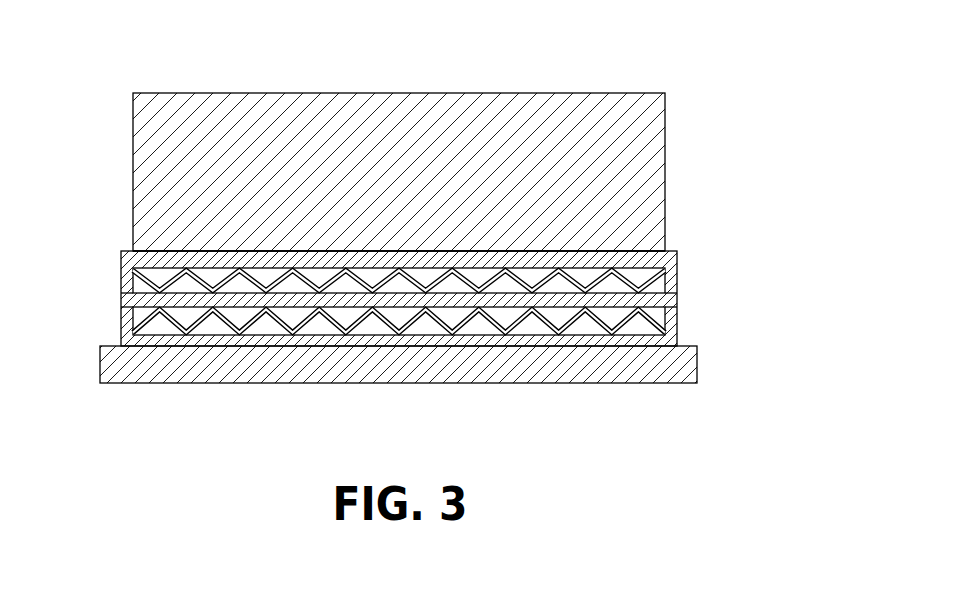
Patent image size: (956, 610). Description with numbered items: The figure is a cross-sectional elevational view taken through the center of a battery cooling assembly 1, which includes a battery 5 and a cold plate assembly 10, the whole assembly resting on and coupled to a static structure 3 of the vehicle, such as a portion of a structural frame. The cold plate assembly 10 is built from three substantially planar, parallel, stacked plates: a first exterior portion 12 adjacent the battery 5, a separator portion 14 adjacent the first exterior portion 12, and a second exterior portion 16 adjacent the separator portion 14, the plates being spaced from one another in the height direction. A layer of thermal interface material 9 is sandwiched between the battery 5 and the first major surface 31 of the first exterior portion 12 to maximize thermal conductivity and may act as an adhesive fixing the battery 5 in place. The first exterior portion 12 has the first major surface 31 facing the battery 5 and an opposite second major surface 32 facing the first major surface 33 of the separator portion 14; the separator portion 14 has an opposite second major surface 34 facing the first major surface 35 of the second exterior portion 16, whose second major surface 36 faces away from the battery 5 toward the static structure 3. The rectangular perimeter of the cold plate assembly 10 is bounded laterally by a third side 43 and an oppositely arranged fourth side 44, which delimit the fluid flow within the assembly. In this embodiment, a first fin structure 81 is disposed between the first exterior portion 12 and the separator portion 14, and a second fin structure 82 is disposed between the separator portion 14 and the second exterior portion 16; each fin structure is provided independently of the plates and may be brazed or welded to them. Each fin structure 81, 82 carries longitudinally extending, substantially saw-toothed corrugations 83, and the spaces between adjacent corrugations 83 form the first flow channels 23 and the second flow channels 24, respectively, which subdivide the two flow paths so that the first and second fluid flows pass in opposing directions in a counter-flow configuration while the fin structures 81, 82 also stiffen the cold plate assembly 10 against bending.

The battery cooling assembly 1 is at (436, 225).
The static structure 3 is at (437, 383).
The battery 5 is at (408, 100).
The thermal interface material 9 is at (157, 252).
The cold plate assembly 10 is at (436, 239).
The first exterior portion 12 is at (672, 253).
The separator portion 14 is at (678, 302).
The second exterior portion 16 is at (672, 342).
The first flow channels 23 is at (372, 277).
The second flow channels 24 is at (323, 327).
The first major surface of the first exterior portion 31 is at (463, 293).
The second major surface of the first exterior portion 32 is at (578, 300).
The first major surface of the separator portion 33 is at (517, 318).
The second major surface of the separator portion 34 is at (610, 330).
The first major surface of the second exterior portion 35 is at (582, 293).
The second major surface of the second exterior portion 36 is at (642, 347).
The third side 43 is at (122, 298).
The fourth side 44 is at (678, 315).
The first fin structure 81 is at (222, 278).
The second fin structure 82 is at (173, 327).
The corrugations 83 is at (268, 270).